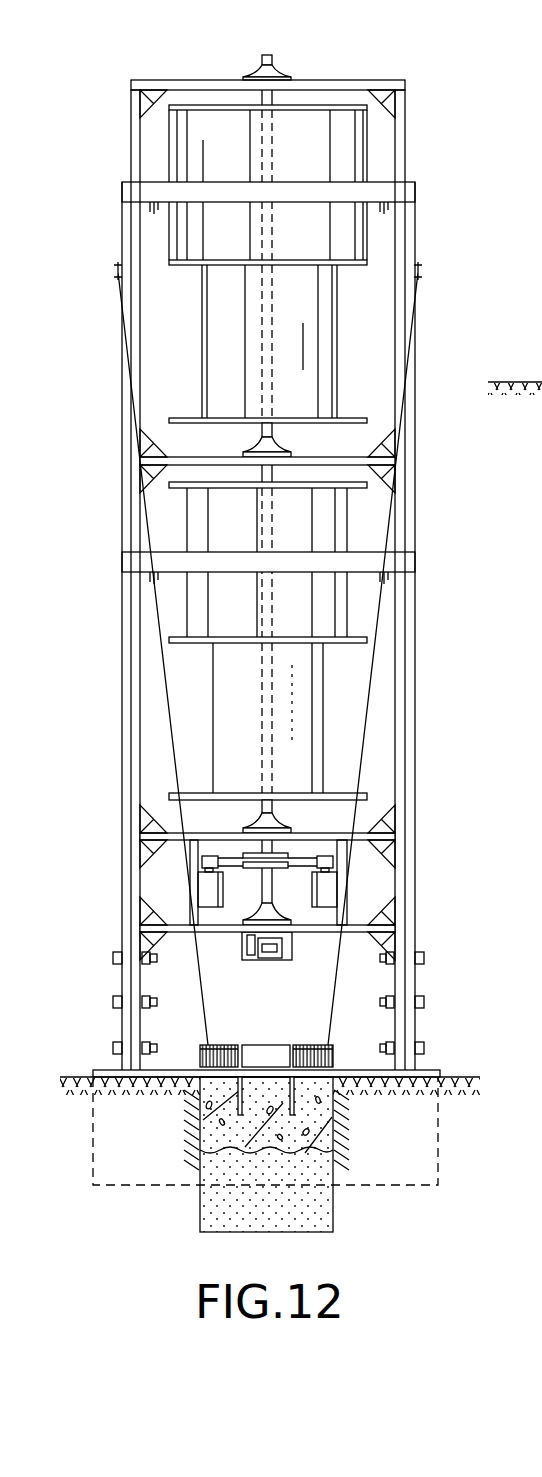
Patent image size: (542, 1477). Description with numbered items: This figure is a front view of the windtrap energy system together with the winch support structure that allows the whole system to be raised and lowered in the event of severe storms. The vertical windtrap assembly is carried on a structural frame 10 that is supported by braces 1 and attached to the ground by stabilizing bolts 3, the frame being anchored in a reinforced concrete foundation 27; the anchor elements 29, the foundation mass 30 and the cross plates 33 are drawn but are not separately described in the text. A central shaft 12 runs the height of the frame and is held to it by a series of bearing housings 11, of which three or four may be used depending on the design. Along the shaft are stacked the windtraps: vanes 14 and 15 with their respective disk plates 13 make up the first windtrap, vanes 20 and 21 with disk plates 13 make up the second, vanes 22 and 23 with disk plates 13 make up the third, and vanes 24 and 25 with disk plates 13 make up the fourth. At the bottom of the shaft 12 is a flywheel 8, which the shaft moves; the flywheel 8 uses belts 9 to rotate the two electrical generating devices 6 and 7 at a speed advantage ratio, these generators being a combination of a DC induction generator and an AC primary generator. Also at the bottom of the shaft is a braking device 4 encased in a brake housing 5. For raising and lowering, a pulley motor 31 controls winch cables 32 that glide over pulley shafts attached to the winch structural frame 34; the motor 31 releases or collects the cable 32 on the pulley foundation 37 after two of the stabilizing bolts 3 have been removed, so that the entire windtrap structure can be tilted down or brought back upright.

The braces 1 is at (152, 100).
The stabilizing bolts 3 is at (113, 1048).
The braking device 4 is at (265, 948).
The brake housing 5 is at (263, 962).
The electrical generating device 6 is at (325, 885).
The electrical generating device 7 is at (205, 888).
The flywheel 8 is at (250, 855).
The belts 9 is at (298, 862).
The structural frame 10 is at (342, 78).
The bearing housing 11 is at (262, 63).
The shaft 12 is at (268, 476).
The disk plates 13 is at (345, 120).
The vane 14 is at (217, 128).
The vane 15 is at (343, 145).
The vane 20 is at (222, 305).
The vane 21 is at (312, 348).
The vane 22 is at (305, 740).
The vane 23 is at (227, 725).
The vane 24 is at (322, 596).
The vane 25 is at (236, 600).
The reinforced concrete foundation 27 is at (440, 1177).
The anchor bolts 29 is at (290, 1100).
The concrete foundation 30 is at (232, 1182).
The pulley motor 31 is at (217, 1052).
The winch cable 32 is at (162, 675).
The support plate 33 is at (372, 195).
The winch structural frame 34 is at (418, 632).
The pulley foundation 37 is at (268, 1052).